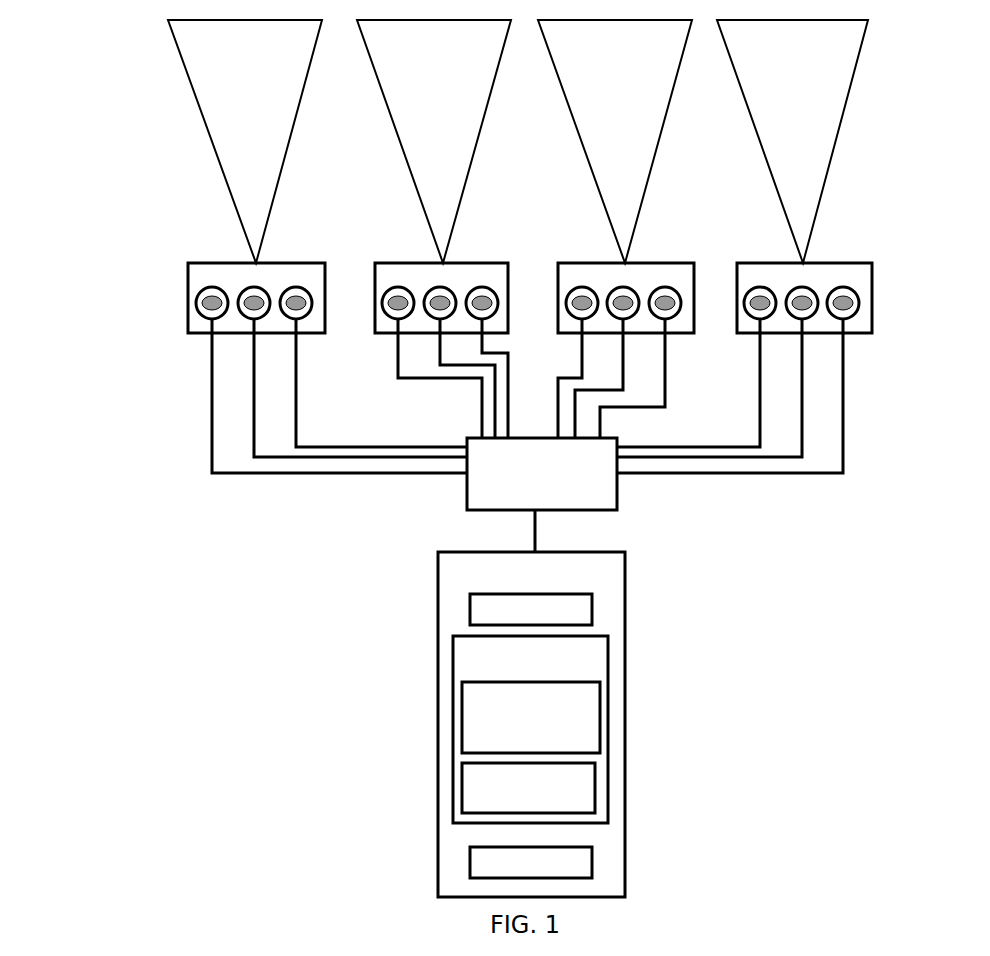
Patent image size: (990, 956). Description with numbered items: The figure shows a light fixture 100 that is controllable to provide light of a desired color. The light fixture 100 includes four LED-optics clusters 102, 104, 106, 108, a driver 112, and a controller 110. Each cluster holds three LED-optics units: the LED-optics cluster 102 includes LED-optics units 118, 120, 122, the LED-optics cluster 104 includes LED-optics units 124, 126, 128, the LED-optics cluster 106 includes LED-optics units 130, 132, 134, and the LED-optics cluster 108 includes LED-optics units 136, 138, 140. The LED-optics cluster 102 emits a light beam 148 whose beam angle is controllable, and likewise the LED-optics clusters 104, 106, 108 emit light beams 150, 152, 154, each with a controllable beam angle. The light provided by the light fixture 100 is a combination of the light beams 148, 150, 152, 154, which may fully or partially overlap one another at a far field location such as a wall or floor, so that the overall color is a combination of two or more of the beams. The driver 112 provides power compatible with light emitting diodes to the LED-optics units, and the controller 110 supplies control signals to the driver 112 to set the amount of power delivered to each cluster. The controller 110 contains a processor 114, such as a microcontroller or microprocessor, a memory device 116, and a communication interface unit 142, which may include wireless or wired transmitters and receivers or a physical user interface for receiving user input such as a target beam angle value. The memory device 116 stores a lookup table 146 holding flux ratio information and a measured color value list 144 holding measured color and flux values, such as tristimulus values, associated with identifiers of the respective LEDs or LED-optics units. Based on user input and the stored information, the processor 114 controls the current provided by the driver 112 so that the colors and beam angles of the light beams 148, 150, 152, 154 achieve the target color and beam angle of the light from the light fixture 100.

The light fixture 100 is at (77, 115).
The LED-optics cluster 102 is at (213, 246).
The LED-optics cluster 104 is at (443, 248).
The LED-optics cluster 106 is at (623, 246).
The LED-optics cluster 108 is at (821, 274).
The controller 110 is at (533, 715).
The driver 112 is at (467, 495).
The processor 114 is at (592, 607).
The memory device 116 is at (549, 695).
The LED-optics unit 118 is at (202, 296).
The LED-optics unit 120 is at (265, 291).
The LED-optics unit 122 is at (305, 291).
The LED-optics unit 124 is at (400, 288).
The LED-optics unit 126 is at (446, 289).
The LED-optics unit 128 is at (490, 291).
The LED-optics unit 130 is at (585, 289).
The LED-optics unit 132 is at (628, 289).
The LED-optics unit 134 is at (671, 289).
The LED-optics unit 136 is at (764, 289).
The LED-optics unit 138 is at (810, 314).
The LED-optics unit 140 is at (850, 287).
The communication interface unit 142 is at (470, 862).
The measured color value list 144 is at (600, 722).
The lookup table 146 is at (463, 788).
The light beam 148 is at (210, 100).
The light beam 150 is at (403, 118).
The light beam 152 is at (594, 122).
The light beam 154 is at (770, 125).